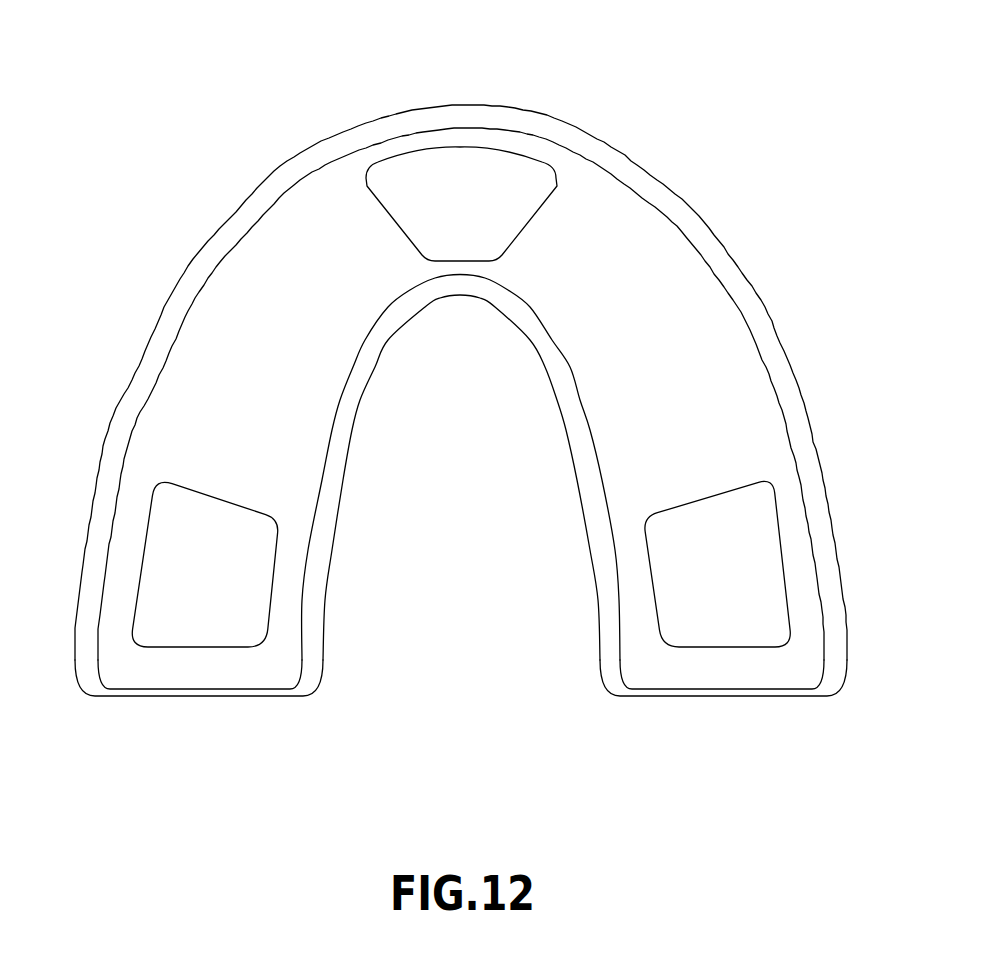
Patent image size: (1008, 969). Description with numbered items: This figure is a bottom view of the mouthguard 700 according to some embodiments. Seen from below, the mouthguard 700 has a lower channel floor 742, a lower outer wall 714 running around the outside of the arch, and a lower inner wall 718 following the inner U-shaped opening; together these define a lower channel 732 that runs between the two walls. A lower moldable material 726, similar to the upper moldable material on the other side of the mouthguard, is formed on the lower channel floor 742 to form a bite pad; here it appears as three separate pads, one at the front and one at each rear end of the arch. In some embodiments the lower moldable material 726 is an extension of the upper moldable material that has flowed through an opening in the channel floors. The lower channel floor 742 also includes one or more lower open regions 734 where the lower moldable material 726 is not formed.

The mouthguard 700 is at (462, 404).
The lower outer wall 714 is at (402, 123).
The lower open region 734 is at (662, 267).
The lower moldable material 726 is at (430, 240).
The lower inner wall 718 is at (327, 650).
The lower channel floor 742 is at (128, 663).
The lower channel 732 is at (735, 660).